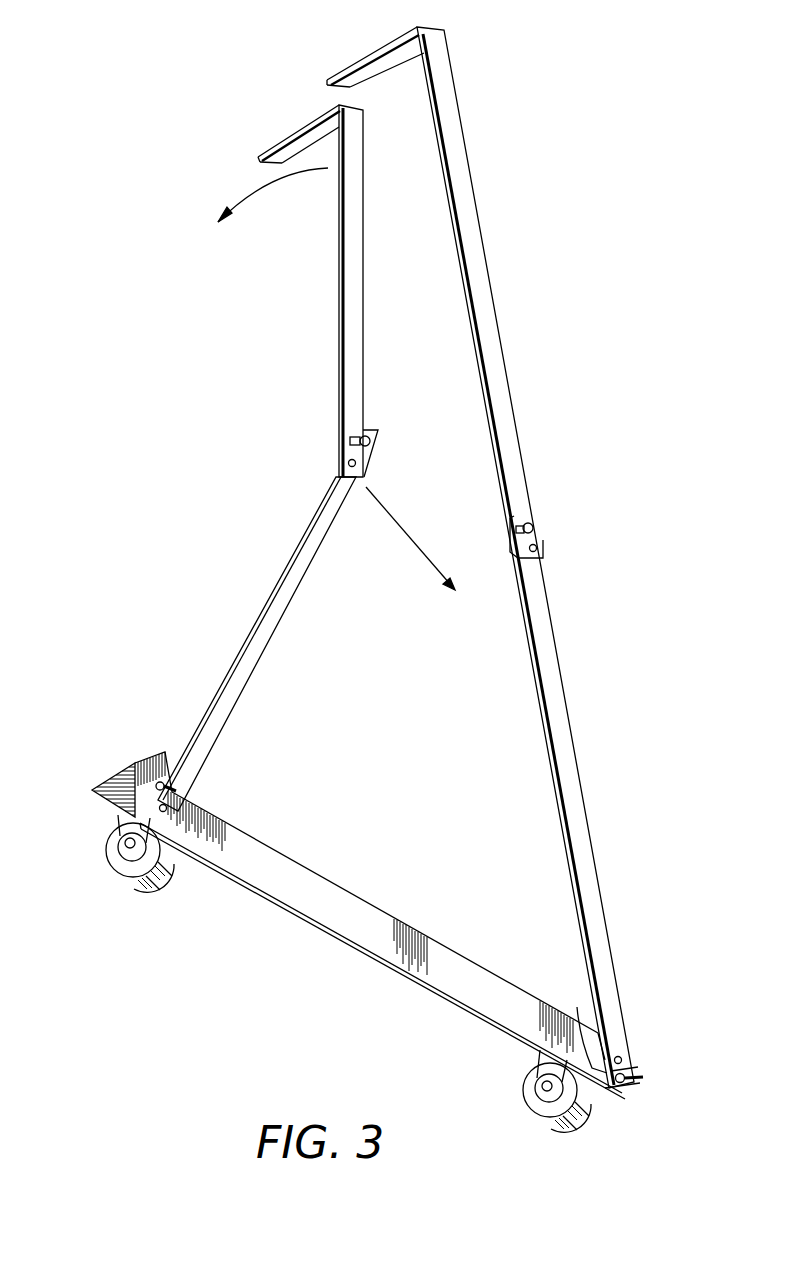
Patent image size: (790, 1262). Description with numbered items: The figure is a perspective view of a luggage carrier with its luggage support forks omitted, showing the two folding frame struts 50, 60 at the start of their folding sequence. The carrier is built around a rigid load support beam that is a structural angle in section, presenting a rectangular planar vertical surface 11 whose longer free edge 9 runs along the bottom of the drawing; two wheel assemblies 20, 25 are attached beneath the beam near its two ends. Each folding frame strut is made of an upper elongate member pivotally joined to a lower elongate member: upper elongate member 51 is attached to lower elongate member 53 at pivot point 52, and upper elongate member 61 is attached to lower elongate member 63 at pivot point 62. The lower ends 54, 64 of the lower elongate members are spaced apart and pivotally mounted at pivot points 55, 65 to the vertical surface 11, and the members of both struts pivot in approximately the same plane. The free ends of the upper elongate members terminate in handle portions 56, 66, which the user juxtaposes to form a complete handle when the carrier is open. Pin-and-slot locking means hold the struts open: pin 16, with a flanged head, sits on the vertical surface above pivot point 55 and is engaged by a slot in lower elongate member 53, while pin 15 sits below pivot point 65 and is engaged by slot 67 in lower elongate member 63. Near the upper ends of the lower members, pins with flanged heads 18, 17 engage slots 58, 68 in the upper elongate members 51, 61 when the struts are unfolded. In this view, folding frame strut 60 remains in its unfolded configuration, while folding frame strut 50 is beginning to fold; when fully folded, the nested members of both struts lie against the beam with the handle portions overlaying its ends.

The longer free edge 9 is at (358, 965).
The vertical surface 11 is at (356, 917).
The pin 15 is at (643, 1077).
The pin 16 is at (159, 781).
The flanged head 17 is at (532, 527).
The flanged head 18 is at (356, 433).
The wheel assembly 20 is at (150, 893).
The wheel assembly 25 is at (549, 1138).
The folding frame strut 50 is at (297, 458).
The upper elongate member 51 is at (339, 340).
The pivot point 52 is at (348, 463).
The lower elongate member 53 is at (249, 621).
The lower end 54 is at (158, 842).
The pivot point 55 is at (168, 809).
The handle portion 56 is at (282, 143).
The slot 58 is at (368, 441).
The folding frame strut 60 is at (504, 575).
The upper elongate member 61 is at (497, 323).
The pivot point 62 is at (538, 545).
The lower elongate member 63 is at (571, 705).
The lower end 64 is at (626, 1093).
The pivot point 65 is at (624, 1058).
The handle portion 66 is at (360, 58).
The slot 67 is at (579, 1028).
The slot 68 is at (516, 531).